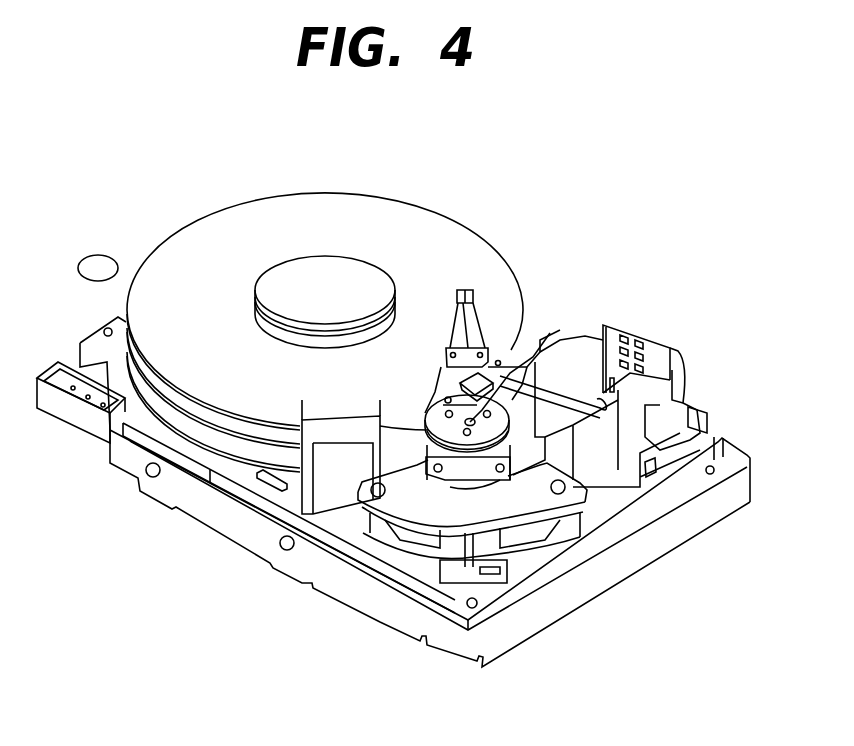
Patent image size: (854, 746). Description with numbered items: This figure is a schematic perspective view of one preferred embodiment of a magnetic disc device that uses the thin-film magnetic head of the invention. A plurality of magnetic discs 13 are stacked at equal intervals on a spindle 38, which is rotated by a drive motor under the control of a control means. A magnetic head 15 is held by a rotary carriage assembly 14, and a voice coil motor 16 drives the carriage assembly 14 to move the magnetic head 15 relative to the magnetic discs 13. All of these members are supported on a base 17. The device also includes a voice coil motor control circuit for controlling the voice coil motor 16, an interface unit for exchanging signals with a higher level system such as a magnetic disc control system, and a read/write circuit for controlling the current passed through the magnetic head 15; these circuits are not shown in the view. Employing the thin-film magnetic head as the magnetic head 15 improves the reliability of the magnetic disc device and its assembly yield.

The magnetic discs 13 is at (260, 215).
The spindle 38 is at (358, 273).
The magnetic head 15 is at (453, 337).
The rotary carriage assembly 14 is at (547, 340).
The voice coil motor 16 is at (448, 506).
The base 17 is at (600, 523).